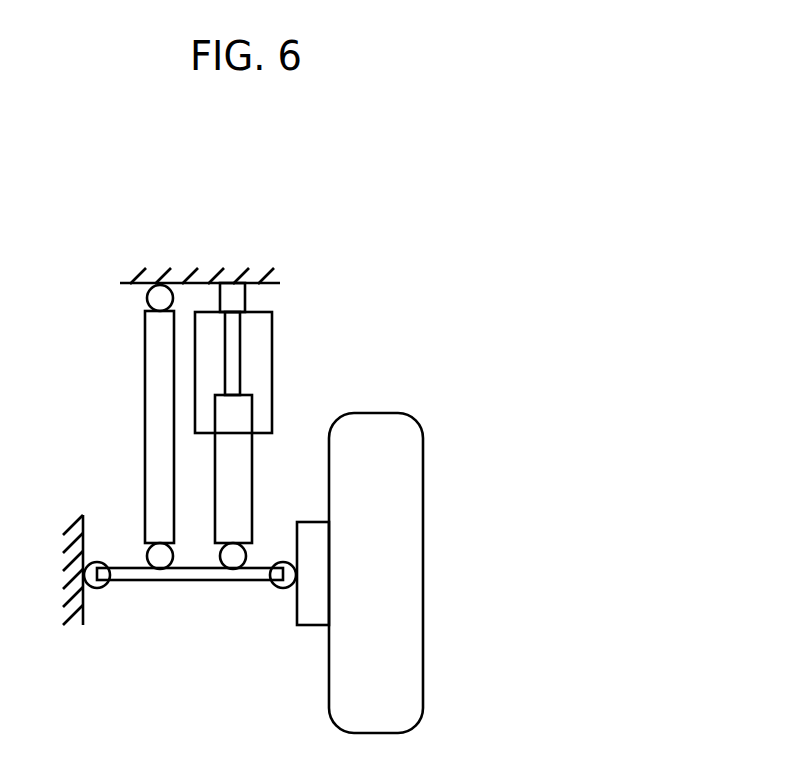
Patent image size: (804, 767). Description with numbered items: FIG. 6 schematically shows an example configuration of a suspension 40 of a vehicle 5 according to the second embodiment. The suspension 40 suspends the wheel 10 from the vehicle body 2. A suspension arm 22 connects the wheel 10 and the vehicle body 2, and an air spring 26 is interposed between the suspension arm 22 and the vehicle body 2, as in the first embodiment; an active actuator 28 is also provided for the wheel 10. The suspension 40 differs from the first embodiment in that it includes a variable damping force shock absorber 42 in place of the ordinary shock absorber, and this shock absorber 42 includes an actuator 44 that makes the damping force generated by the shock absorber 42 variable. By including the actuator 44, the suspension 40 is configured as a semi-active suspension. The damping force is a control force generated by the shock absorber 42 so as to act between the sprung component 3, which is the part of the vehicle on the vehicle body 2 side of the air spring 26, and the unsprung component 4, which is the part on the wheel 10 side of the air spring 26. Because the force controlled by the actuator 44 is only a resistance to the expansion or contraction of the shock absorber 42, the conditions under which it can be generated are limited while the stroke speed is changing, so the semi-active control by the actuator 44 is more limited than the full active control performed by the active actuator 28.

The vehicle body 2 is at (210, 279).
The sprung component 3 is at (314, 265).
The unsprung component 4 is at (450, 411).
The vehicle 5 is at (426, 231).
The wheel 10 is at (423, 484).
The suspension arm 22 is at (193, 582).
The air spring 26 is at (272, 364).
The active actuator 28 is at (145, 395).
The suspension 40 is at (86, 326).
The variable damping force shock absorber 42 is at (252, 490).
The actuator 44 is at (245, 296).